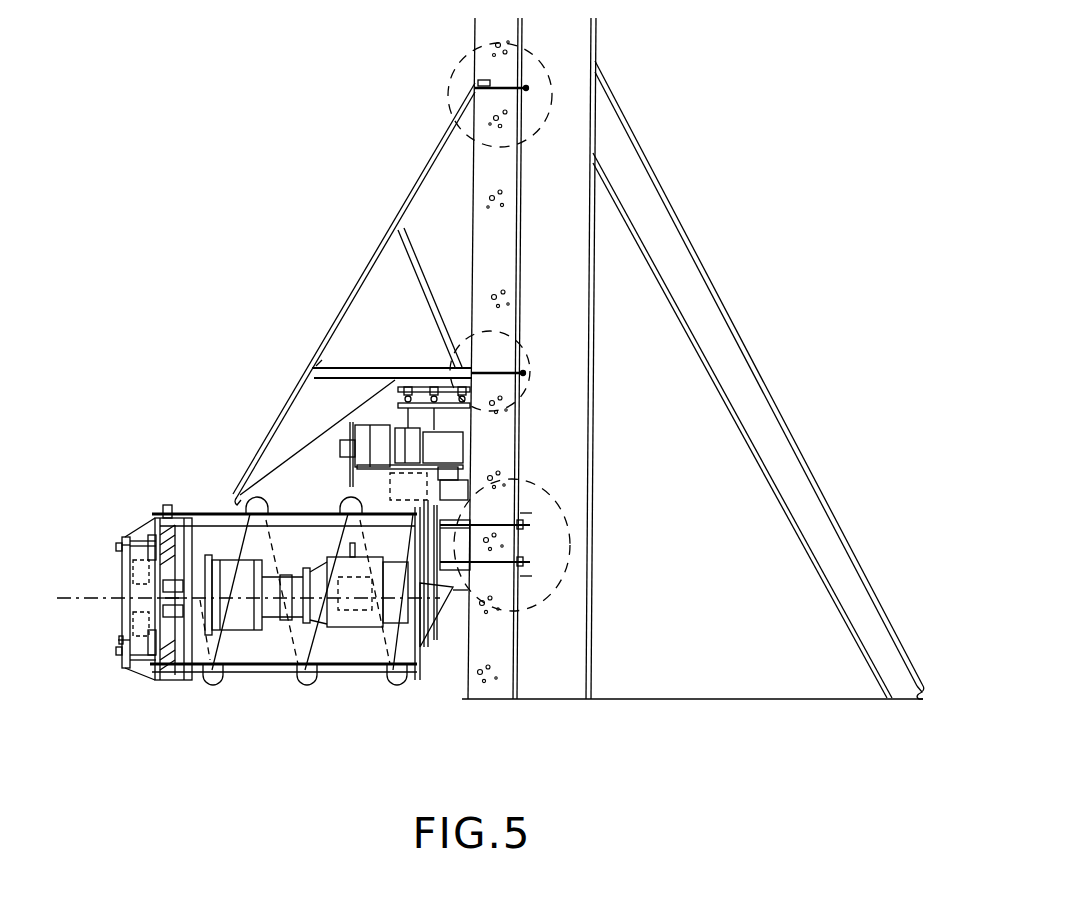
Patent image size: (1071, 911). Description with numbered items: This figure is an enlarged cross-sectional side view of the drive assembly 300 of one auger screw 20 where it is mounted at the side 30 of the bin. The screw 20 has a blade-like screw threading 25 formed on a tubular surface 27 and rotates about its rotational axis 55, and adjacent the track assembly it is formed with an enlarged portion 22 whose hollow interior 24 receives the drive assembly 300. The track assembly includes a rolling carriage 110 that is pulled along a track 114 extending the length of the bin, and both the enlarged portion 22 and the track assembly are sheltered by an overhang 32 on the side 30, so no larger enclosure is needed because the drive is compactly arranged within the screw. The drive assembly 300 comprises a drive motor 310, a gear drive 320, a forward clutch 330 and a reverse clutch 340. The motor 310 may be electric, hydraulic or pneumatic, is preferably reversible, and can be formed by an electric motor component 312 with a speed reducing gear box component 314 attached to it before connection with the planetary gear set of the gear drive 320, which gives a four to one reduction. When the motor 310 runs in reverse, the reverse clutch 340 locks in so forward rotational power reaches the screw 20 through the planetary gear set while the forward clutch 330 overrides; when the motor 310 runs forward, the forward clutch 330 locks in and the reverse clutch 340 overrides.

The auger screw 20 is at (92, 662).
The enlarged portion 22 is at (338, 677).
The hollow interior 24 is at (272, 650).
The screw threading 25 is at (63, 668).
The tubular surface 27 is at (122, 559).
The side 30 is at (598, 64).
The overhang 32 is at (408, 203).
The rotational axis 55 is at (122, 640).
The rolling carriage 110 is at (452, 425).
The track 114 is at (456, 522).
The drive assembly 300 is at (218, 476).
The drive motor 310 is at (245, 618).
The electric motor component 312 is at (328, 560).
The speed reducing gear box component 314 is at (230, 540).
The gear drive 320 is at (172, 516).
The forward clutch 330 is at (187, 652).
The reverse clutch 340 is at (150, 672).